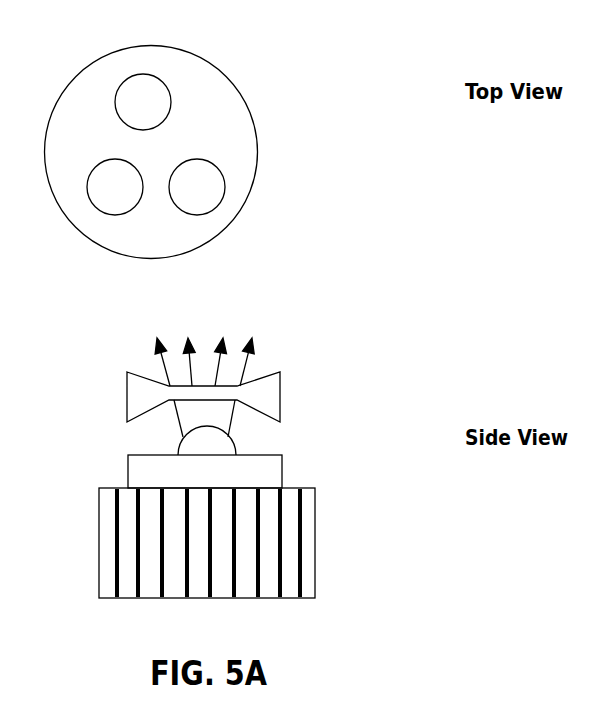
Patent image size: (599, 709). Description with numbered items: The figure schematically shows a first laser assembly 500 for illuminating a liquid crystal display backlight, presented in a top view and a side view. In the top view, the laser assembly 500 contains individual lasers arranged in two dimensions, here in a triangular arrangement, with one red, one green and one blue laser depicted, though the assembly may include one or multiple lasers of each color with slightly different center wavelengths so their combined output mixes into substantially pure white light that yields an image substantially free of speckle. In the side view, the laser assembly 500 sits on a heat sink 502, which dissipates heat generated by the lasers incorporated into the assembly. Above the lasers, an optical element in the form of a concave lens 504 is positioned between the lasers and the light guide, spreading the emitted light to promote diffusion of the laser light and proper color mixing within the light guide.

The laser assembly 500 is at (230, 83).
The heat sink 502 is at (315, 527).
The concave lens 504 is at (280, 397).